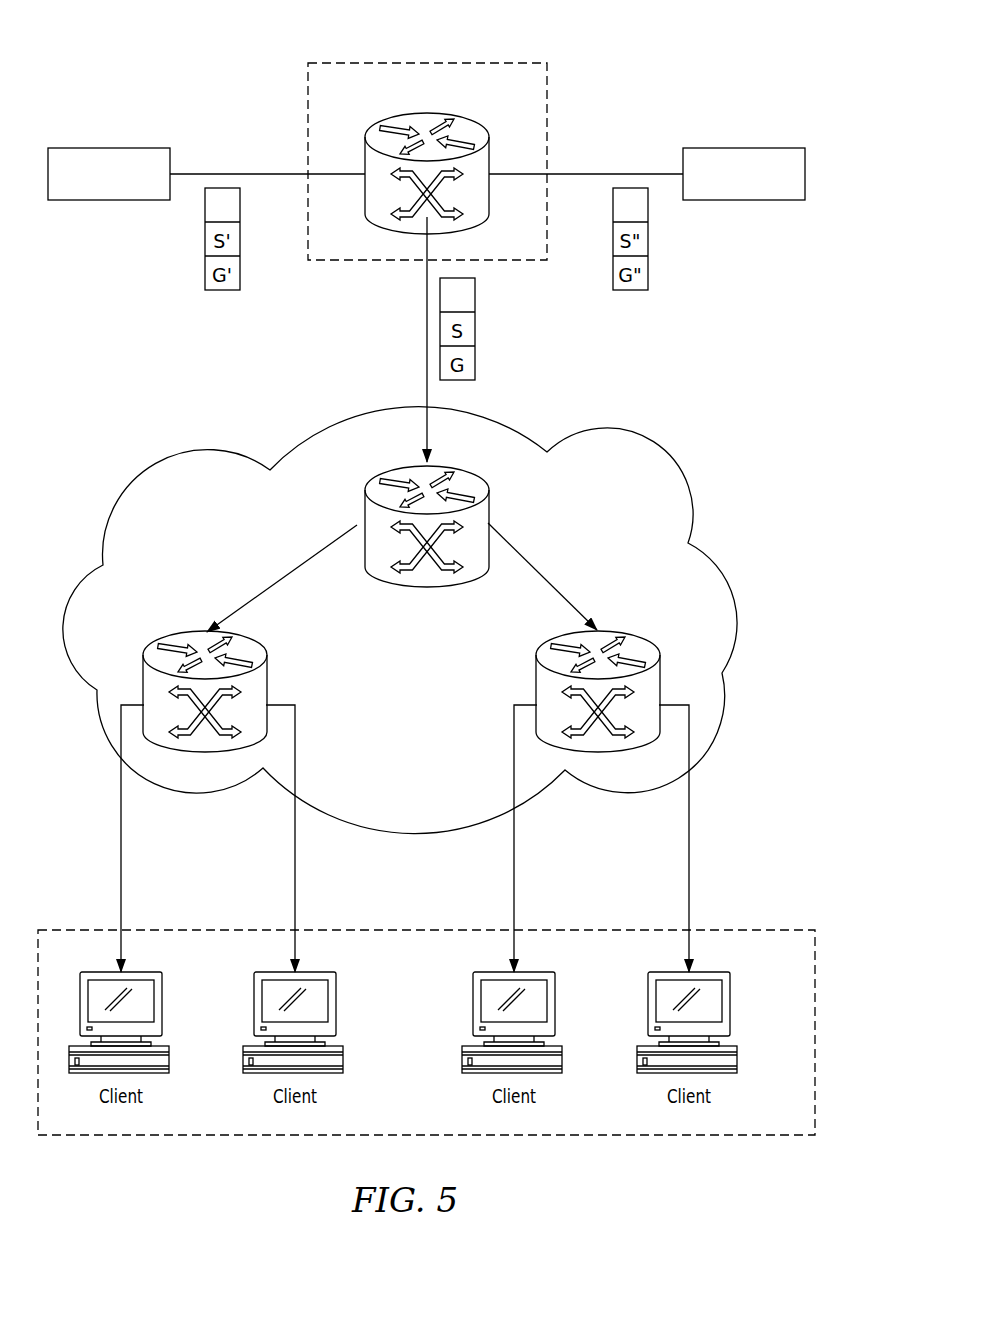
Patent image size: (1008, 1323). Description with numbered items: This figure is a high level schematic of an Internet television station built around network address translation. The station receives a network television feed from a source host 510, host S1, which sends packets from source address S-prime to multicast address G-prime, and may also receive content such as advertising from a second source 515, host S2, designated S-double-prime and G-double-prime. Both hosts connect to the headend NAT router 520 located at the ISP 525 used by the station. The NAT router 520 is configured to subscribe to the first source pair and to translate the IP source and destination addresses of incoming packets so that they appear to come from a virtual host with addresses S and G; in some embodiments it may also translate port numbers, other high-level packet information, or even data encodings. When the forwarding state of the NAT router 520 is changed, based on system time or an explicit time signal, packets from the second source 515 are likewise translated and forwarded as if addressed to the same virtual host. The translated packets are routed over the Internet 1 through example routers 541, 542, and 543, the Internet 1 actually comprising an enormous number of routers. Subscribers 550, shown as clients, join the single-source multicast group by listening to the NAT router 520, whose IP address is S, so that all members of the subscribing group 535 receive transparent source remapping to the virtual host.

The ISP 525 is at (512, 63).
The NAT router 520 is at (476, 118).
The source host 510 is at (68, 201).
The second source 515 is at (785, 201).
The Internet 1 is at (650, 440).
The router 541 is at (427, 586).
The router 542 is at (267, 677).
The router 543 is at (536, 677).
The subscribers 550 is at (162, 1004).
The subscribing group 535 is at (745, 1137).